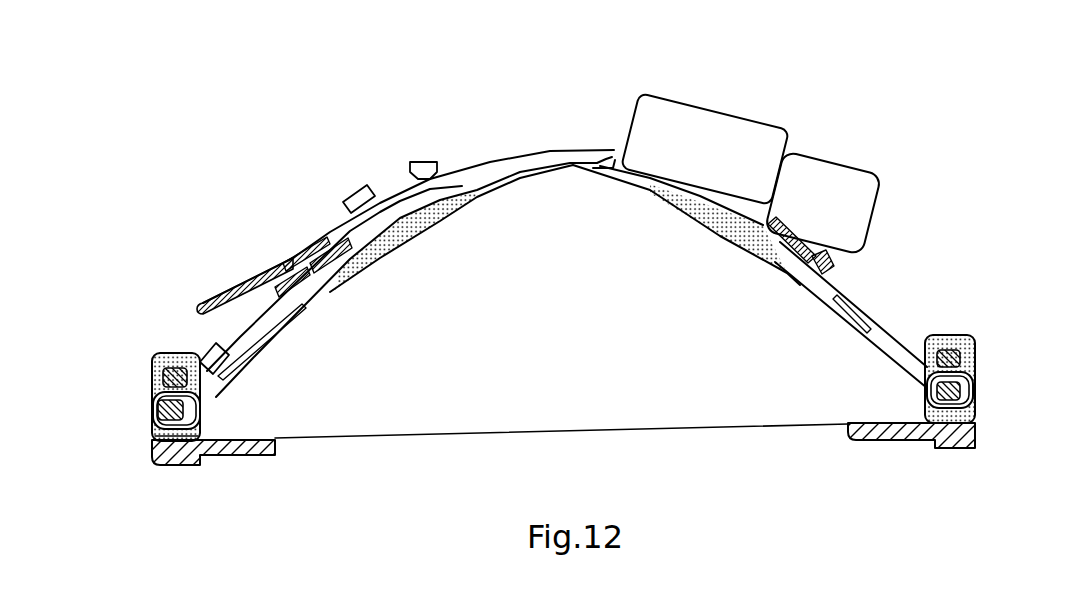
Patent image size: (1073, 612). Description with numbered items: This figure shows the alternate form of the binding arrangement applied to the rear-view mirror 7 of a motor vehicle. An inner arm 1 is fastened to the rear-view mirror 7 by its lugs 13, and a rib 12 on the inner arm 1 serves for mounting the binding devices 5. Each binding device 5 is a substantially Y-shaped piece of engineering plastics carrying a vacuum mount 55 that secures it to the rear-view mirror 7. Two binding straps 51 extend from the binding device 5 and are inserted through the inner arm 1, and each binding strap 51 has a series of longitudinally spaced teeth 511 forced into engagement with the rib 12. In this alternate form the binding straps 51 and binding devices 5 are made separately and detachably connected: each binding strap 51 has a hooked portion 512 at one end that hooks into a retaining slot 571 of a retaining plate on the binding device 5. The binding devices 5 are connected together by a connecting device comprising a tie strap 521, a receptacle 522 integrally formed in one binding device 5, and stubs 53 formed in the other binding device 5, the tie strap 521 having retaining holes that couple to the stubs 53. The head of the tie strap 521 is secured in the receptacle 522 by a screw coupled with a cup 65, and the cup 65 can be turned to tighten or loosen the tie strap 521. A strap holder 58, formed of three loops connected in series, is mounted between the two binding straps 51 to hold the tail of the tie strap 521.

The inner arm 1 is at (150, 368).
The binding device 5 is at (347, 242).
The rear-view mirror 7 is at (582, 432).
The rib 12 is at (196, 406).
The lug 13 is at (238, 455).
The binding strap 51 is at (150, 402).
The teeth 511 is at (152, 437).
The hooked portion 512 is at (297, 252).
The tie strap 521 is at (519, 158).
The receptacle 522 is at (713, 112).
The stub 53 is at (425, 160).
The vacuum mount 55 is at (420, 223).
The retaining slot 571 is at (306, 258).
The strap holder 58 is at (205, 342).
The cup 65 is at (851, 171).